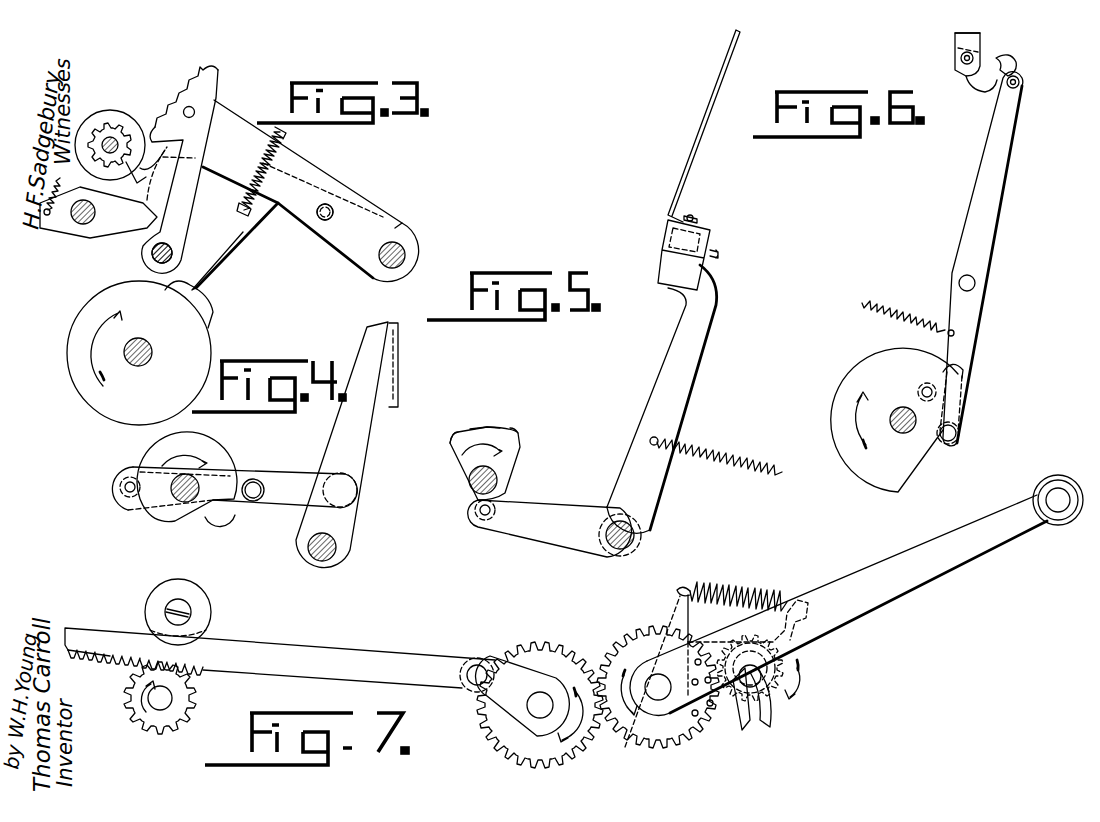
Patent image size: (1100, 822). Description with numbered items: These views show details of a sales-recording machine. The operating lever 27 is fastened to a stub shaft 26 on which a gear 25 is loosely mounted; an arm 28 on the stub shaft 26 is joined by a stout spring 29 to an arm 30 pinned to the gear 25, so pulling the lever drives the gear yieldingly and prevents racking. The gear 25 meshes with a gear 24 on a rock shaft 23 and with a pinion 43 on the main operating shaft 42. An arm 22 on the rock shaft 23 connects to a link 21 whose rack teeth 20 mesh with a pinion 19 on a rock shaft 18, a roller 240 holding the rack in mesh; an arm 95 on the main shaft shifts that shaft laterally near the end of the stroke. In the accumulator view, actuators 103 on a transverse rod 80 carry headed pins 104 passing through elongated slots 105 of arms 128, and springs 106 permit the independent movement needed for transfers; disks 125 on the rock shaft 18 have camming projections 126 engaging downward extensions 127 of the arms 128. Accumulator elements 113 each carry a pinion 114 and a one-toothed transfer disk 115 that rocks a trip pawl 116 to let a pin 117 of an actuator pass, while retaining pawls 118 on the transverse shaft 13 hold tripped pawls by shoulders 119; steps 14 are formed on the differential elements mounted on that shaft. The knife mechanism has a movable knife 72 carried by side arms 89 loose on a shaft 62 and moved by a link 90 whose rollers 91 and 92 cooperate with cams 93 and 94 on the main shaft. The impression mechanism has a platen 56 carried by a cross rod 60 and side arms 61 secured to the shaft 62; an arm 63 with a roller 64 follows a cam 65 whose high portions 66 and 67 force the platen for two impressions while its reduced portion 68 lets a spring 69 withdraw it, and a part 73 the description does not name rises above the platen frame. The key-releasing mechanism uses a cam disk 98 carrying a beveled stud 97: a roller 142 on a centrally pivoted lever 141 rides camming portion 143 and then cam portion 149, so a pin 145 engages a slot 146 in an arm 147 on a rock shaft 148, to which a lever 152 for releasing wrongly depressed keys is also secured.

In FIG. 3, the transverse shaft 13 is at (62, 226).
In FIG. 6, the steps 14 is at (862, 313).
In FIG. 3, the rock shaft 18 is at (144, 343).
In FIG. 7, the rock shaft 18 is at (173, 698).
In FIG. 7, the pinion 19 is at (176, 716).
In FIG. 7, the rack teeth 20 is at (116, 655).
In FIG. 7, the link 21 is at (314, 659).
In FIG. 7, the arm 22 is at (505, 676).
In FIG. 7, the rock shaft 23 is at (527, 712).
In FIG. 7, the gear 24 is at (551, 652).
In FIG. 7, the roller 240 is at (206, 618).
In FIG. 7, the gear 25 is at (620, 662).
In FIG. 7, the stub shaft 26 is at (652, 698).
In FIG. 7, the operating lever 27 is at (867, 577).
In FIG. 7, the arm 28 is at (677, 616).
In FIG. 7, the spring 29 is at (736, 593).
In FIG. 7, the arm 30 is at (812, 632).
In FIG. 4, the main operating shaft 42 is at (180, 501).
In FIG. 5, the main operating shaft 42 is at (473, 484).
In FIG. 6, the main operating shaft 42 is at (900, 434).
In FIG. 7, the main operating shaft 42 is at (747, 684).
In FIG. 7, the pinion 43 is at (772, 700).
In FIG. 5, the platen 56 is at (698, 222).
In FIG. 5, the cross rod 60 is at (710, 238).
In FIG. 5, the side arms 61 is at (697, 363).
In FIG. 4, the shaft 62 is at (337, 548).
In FIG. 5, the shaft 62 is at (636, 535).
In FIG. 5, the arm 63 is at (553, 509).
In FIG. 5, the roller 64 is at (485, 516).
In FIG. 5, the cam 65 is at (509, 463).
In FIG. 5, the high portion 66 is at (517, 433).
In FIG. 5, the high portion 67 is at (455, 435).
In FIG. 5, the reduced portion 68 is at (487, 428).
In FIG. 5, the spring 69 is at (723, 446).
In FIG. 4, the movable knife 72 is at (399, 340).
In FIG. 5, the rod 73 is at (703, 141).
In FIG. 3, the transverse rod 80 is at (407, 253).
In FIG. 4, the side arms 89 is at (365, 478).
In FIG. 4, the link 90 is at (287, 478).
In FIG. 4, the roller 91 is at (253, 502).
In FIG. 4, the roller 92 is at (125, 492).
In FIG. 4, the cam 93 is at (226, 465).
In FIG. 4, the cam 94 is at (222, 519).
In FIG. 7, the arm 95 is at (756, 725).
In FIG. 6, the beveled stud 97 is at (921, 388).
In FIG. 6, the cam disk 98 is at (922, 458).
In FIG. 3, the actuator 103 is at (227, 127).
In FIG. 3, the headed pin 104 is at (325, 221).
In FIG. 3, the elongated slot 105 is at (331, 207).
In FIG. 3, the spring 106 is at (280, 150).
In FIG. 3, the accumulator elements 113 is at (124, 82).
In FIG. 3, the pinion 114 is at (110, 134).
In FIG. 3, the one-toothed transfer disk 115 is at (135, 168).
In FIG. 3, the trip pawls 116 is at (183, 214).
In FIG. 3, the pins 117 is at (186, 107).
In FIG. 3, the retaining pawls 118 is at (45, 222).
In FIG. 3, the shoulders 119 is at (143, 236).
In FIG. 3, the disks 125 is at (97, 306).
In FIG. 3, the camming projections 126 is at (212, 313).
In FIG. 3, the downward extensions 127 is at (243, 235).
In FIG. 3, the arms 128 is at (386, 226).
In FIG. 6, the lever 141 is at (984, 255).
In FIG. 6, the roller 142 is at (956, 440).
In FIG. 6, the camming portion 143 is at (951, 402).
In FIG. 6, the pin 145 is at (1019, 87).
In FIG. 6, the slot 146 is at (1010, 58).
In FIG. 6, the arm 147 is at (978, 76).
In FIG. 6, the rock shaft 148 is at (960, 58).
In FIG. 6, the cam portion 149 is at (960, 378).
In FIG. 6, the lever 152 is at (955, 34).